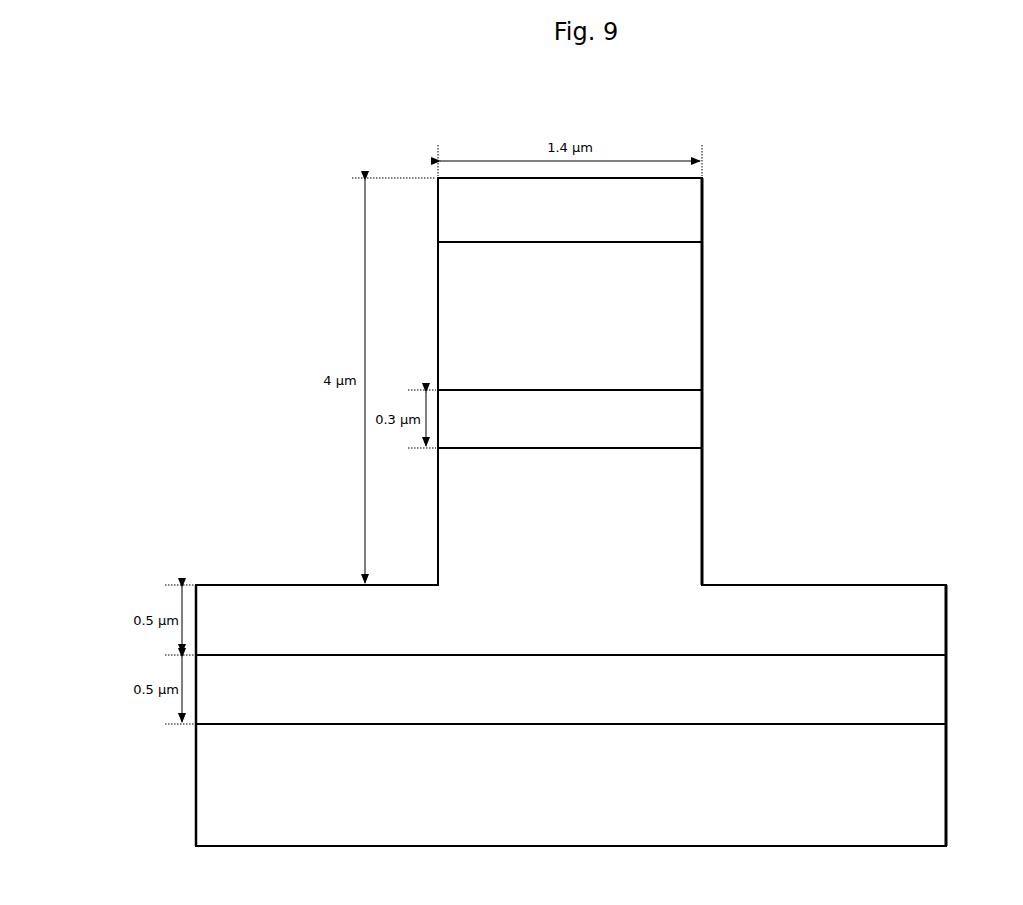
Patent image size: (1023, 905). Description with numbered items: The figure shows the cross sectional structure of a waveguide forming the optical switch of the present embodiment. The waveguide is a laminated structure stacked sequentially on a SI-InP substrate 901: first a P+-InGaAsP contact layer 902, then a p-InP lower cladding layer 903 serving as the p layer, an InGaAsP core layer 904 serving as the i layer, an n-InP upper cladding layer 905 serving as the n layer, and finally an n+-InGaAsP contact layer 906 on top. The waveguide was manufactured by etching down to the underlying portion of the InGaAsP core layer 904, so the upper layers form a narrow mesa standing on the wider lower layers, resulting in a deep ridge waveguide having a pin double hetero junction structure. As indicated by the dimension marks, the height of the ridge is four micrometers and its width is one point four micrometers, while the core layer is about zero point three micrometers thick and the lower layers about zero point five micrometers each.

The SI-InP substrate 901 is at (947, 783).
The P+-InGaAsP contact layer 902 is at (947, 692).
The p-InP lower cladding layer 903 is at (947, 622).
The InGaAsP core layer 904 is at (703, 421).
The n-InP upper cladding layer 905 is at (703, 317).
The n+-InGaAsP contact layer 906 is at (703, 213).